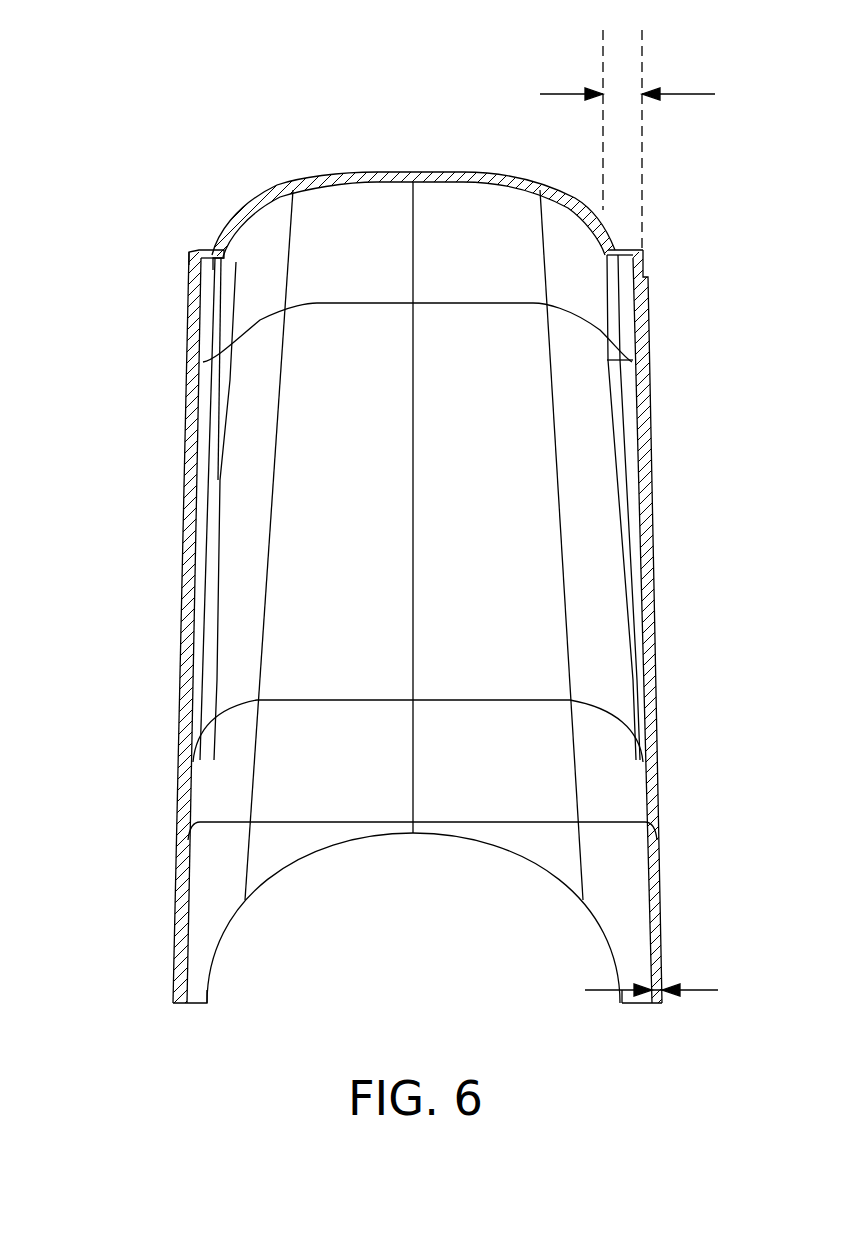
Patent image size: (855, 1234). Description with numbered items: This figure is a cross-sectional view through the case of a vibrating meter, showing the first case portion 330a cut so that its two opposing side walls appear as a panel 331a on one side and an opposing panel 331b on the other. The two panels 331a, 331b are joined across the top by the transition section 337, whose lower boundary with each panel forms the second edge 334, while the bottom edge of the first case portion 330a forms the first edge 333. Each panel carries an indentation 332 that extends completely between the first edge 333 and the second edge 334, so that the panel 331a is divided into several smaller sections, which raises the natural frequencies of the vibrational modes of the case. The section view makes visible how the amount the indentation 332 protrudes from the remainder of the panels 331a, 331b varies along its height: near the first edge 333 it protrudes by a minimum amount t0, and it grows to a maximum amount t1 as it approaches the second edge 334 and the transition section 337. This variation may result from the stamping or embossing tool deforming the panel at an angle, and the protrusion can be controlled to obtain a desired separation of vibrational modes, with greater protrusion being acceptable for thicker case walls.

The first case portion 330a is at (403, 568).
The panel 331a is at (205, 480).
The opposing panel 331b is at (627, 482).
The indentation 332 is at (187, 318).
The first edge 333 is at (190, 1005).
The second edge 334 is at (232, 226).
The transition section 337 is at (478, 443).
The maximum protrusion amount t1 is at (704, 93).
The minimum protrusion amount t0 is at (704, 990).